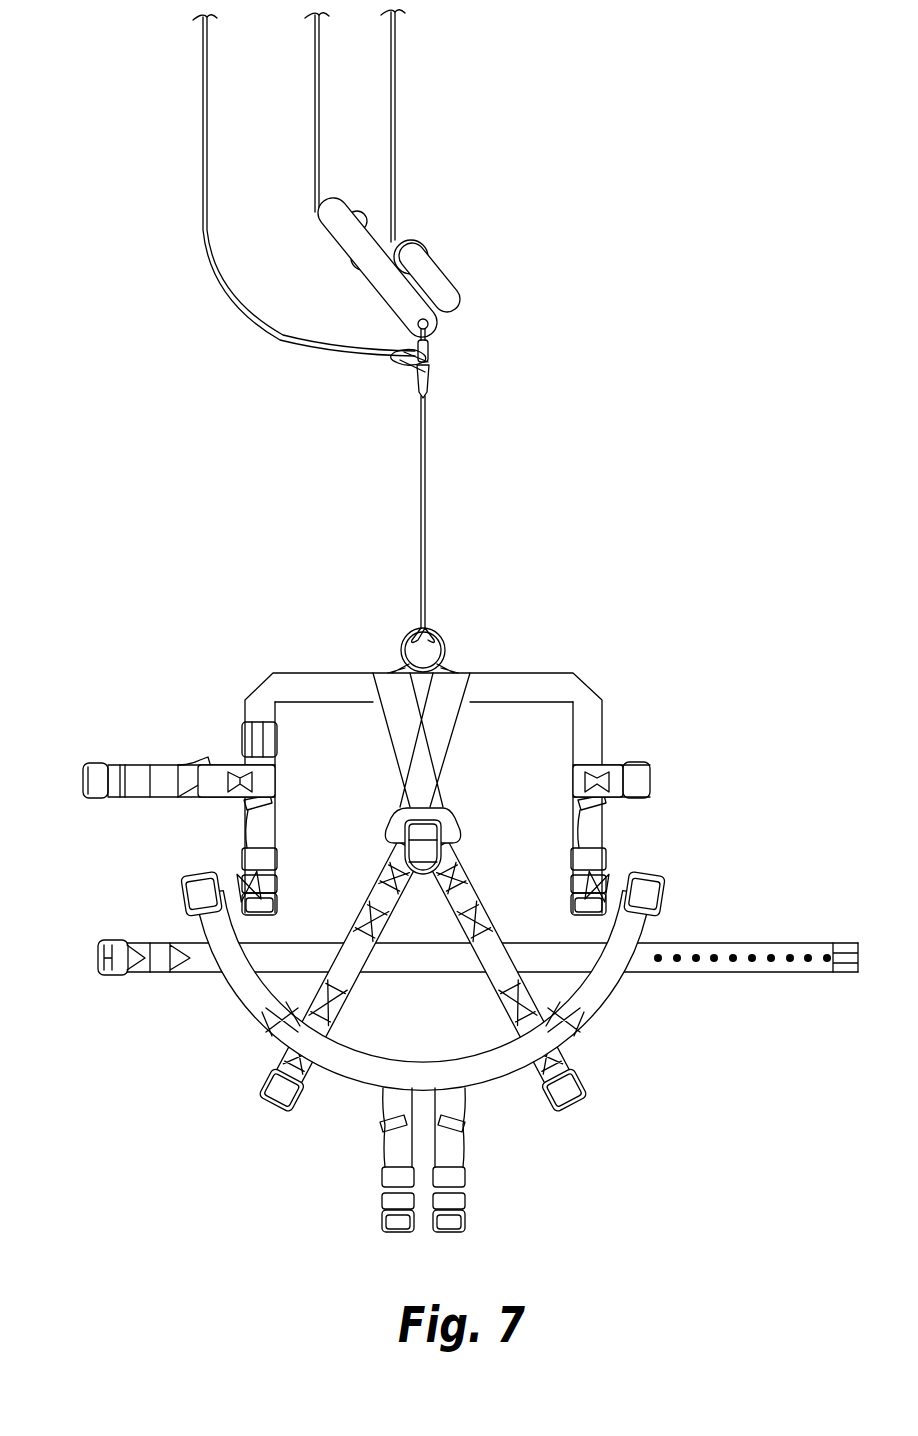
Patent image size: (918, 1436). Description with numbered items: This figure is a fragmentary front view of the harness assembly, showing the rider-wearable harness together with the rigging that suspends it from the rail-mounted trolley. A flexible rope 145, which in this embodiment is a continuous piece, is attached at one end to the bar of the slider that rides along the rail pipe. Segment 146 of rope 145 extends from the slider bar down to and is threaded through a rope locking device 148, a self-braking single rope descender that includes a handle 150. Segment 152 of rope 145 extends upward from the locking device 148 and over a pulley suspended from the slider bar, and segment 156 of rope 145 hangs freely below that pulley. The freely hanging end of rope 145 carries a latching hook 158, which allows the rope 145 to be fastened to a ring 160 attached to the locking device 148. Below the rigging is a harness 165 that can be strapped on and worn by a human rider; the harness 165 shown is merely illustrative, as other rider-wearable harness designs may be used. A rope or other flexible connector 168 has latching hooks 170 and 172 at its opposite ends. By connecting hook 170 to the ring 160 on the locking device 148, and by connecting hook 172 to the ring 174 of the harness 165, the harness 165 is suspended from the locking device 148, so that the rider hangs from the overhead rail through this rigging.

The flexible rope 145 is at (427, 150).
The segment of rope 146 is at (396, 52).
The rope locking device 148 is at (445, 243).
The handle 150 is at (462, 312).
The segment of rope 152 is at (319, 75).
The segment of rope 156 is at (203, 100).
The latching hook 158 is at (400, 371).
The ring 160 is at (432, 356).
The harness 165 is at (636, 1047).
The flexible connector 168 is at (429, 500).
The latching hook 170 is at (417, 395).
The latching hook 172 is at (432, 622).
The ring 174 is at (408, 636).